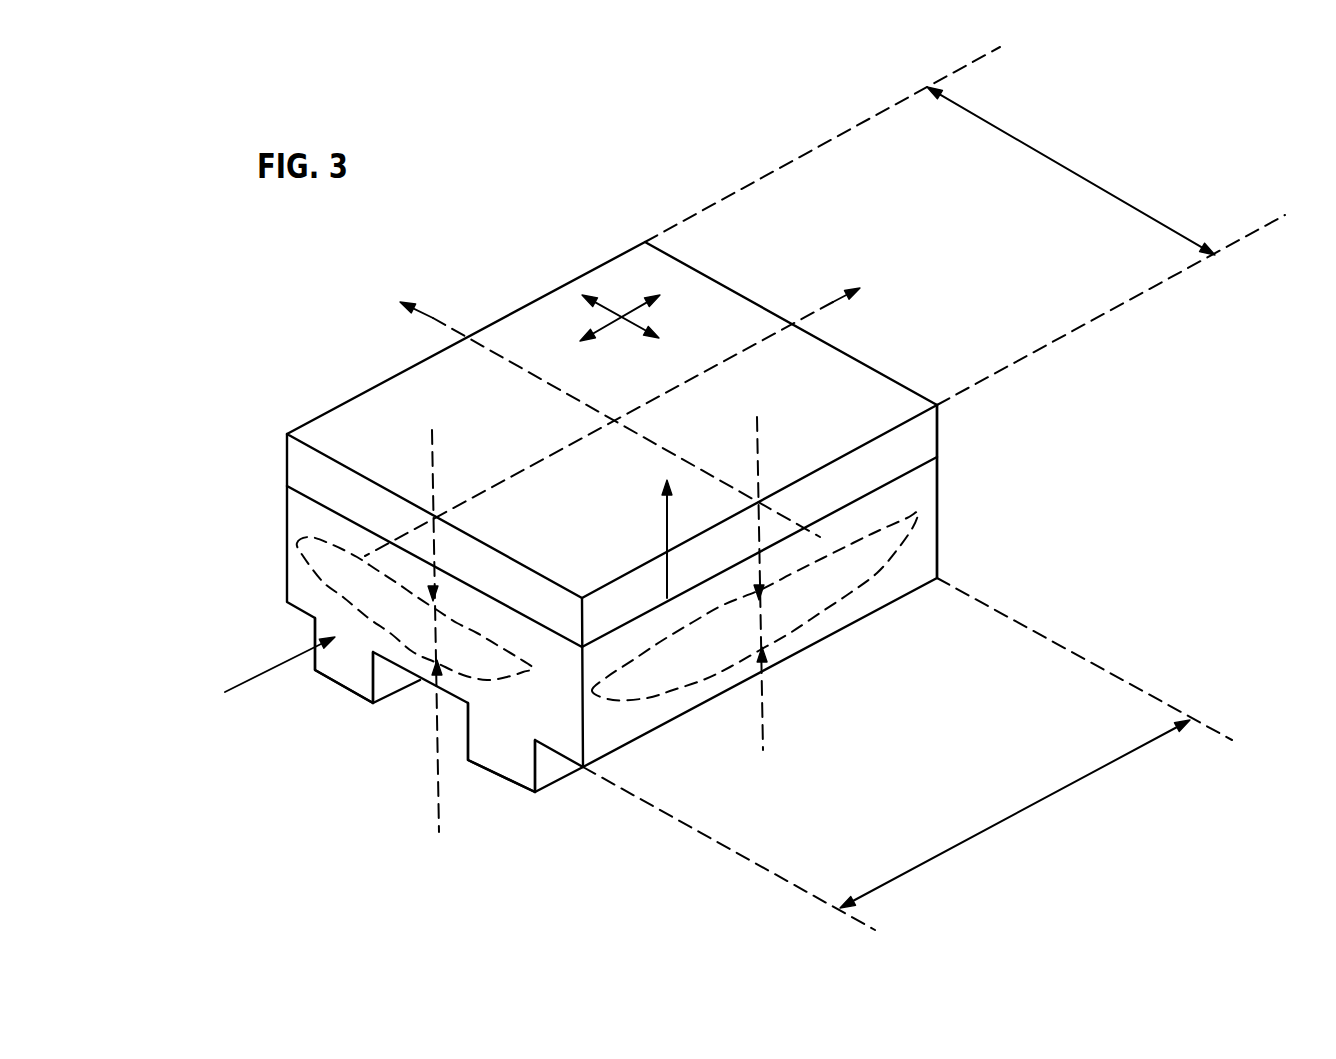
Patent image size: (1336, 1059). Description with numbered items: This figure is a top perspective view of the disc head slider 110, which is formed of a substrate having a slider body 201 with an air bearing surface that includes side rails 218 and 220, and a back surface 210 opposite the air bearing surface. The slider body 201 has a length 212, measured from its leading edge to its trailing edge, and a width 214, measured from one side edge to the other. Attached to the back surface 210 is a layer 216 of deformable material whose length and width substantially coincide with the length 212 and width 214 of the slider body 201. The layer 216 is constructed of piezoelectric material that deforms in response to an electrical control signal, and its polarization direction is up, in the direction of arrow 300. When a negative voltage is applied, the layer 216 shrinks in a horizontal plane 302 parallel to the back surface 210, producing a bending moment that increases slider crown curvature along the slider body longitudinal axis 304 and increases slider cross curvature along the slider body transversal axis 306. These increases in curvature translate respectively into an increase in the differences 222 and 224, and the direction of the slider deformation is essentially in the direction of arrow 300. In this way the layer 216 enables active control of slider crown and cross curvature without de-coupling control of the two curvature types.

The disc head slider 110 is at (552, 240).
The slider body 201 is at (258, 679).
The back surface 210 is at (325, 507).
The length 212 is at (1015, 817).
The width 214 is at (1063, 165).
The layer of deformable material 216 is at (920, 447).
The side rail 218 is at (500, 777).
The side rail 220 is at (348, 689).
The difference 222 is at (757, 720).
The difference 224 is at (438, 773).
The arrow 300 is at (666, 530).
The horizontal plane 302 is at (622, 317).
The slider body longitudinal axis 304 is at (812, 312).
The slider body transversal axis 306 is at (452, 330).